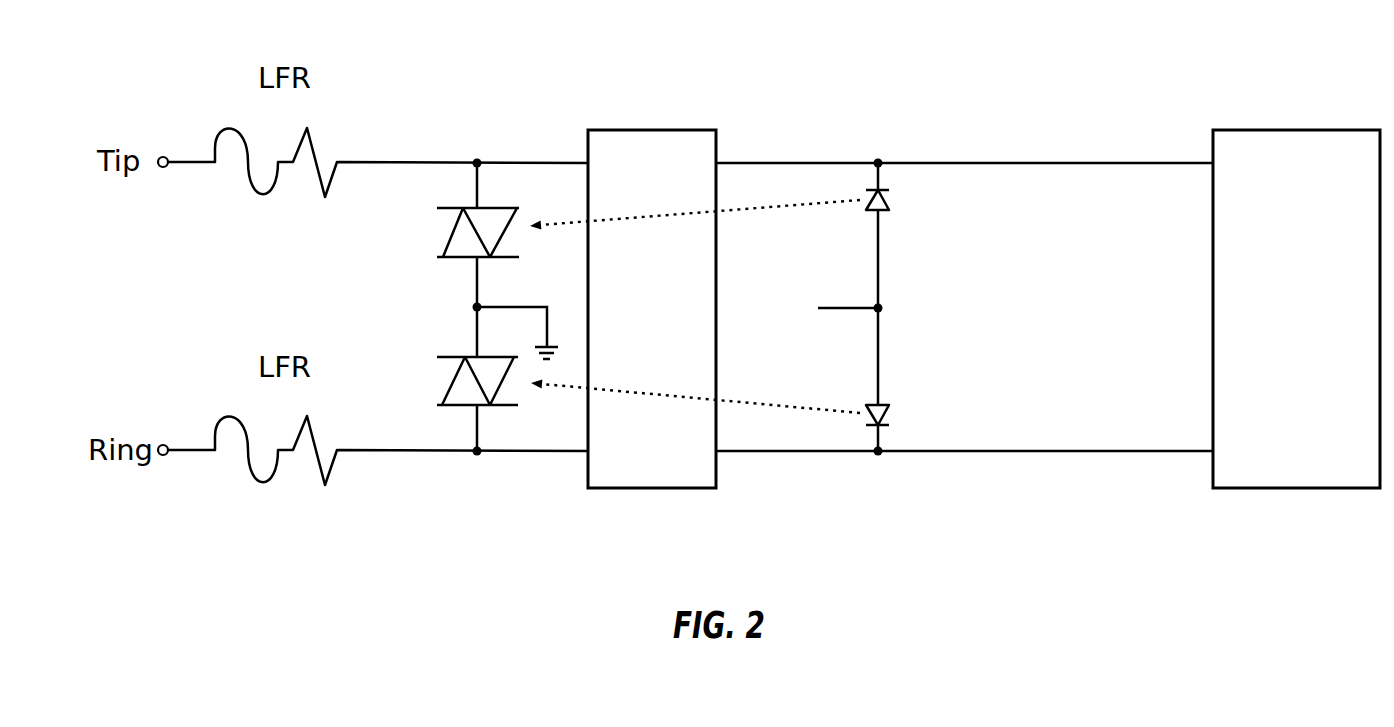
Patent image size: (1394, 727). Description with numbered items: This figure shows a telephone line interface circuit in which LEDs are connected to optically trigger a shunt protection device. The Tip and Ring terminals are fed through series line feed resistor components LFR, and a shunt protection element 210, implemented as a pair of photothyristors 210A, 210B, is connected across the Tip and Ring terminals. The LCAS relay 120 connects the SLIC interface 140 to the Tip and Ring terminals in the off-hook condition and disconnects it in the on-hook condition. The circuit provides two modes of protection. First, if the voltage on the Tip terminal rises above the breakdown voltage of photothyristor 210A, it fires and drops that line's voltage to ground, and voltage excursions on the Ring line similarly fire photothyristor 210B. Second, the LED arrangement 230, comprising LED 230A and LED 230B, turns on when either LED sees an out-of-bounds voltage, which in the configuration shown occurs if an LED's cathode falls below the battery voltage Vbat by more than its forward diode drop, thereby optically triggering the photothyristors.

The shunt protection element 210 is at (477, 142).
The photothyristor 210A is at (434, 227).
The photothyristor 210B is at (433, 388).
The LCAS relay 120 is at (673, 379).
The LED pair 230 is at (877, 468).
The LED 230A is at (905, 210).
The LED 230B is at (905, 401).
The SLIC interface 140 is at (1318, 343).